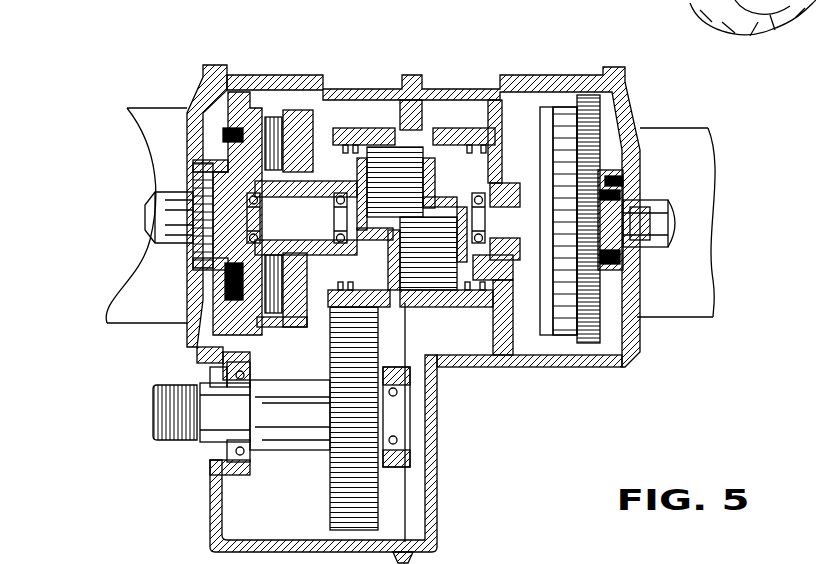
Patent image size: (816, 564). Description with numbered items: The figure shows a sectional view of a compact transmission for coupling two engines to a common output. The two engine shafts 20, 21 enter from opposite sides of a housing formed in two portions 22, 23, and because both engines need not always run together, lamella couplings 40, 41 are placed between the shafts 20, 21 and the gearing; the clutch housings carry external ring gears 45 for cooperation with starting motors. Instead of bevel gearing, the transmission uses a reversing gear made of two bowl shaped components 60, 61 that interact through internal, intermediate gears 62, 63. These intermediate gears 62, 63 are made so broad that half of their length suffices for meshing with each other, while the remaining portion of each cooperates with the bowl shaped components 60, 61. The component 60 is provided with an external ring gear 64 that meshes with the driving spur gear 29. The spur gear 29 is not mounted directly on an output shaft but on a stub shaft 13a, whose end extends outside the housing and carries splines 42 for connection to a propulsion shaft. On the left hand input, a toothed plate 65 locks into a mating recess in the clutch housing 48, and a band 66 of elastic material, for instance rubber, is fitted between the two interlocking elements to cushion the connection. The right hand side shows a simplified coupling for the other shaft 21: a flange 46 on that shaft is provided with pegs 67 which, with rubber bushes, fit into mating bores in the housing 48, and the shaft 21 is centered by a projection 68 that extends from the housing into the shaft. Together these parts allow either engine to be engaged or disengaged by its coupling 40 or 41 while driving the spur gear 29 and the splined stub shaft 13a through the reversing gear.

The stub shaft 13a is at (297, 427).
The shaft 20 is at (163, 212).
The shaft 21 is at (657, 213).
The housing portion 22 is at (210, 513).
The housing portion 23 is at (493, 367).
The spur gear 29 is at (367, 352).
The lamella coupling 40 is at (268, 325).
The lamella coupling 41 is at (570, 117).
The splines 42 is at (167, 420).
The external ring gear 45 is at (240, 97).
The flange 46 is at (200, 242).
The housing 48 is at (238, 113).
The bowl shaped component 60 is at (362, 137).
The bowl shaped component 61 is at (410, 163).
The intermediate gear 62 is at (467, 130).
The intermediate gear 63 is at (443, 263).
The external ring gear 64 is at (340, 130).
The toothed plate 65 is at (227, 157).
The band 66 is at (227, 132).
The pegs 67 is at (623, 187).
The projection 68 is at (643, 223).